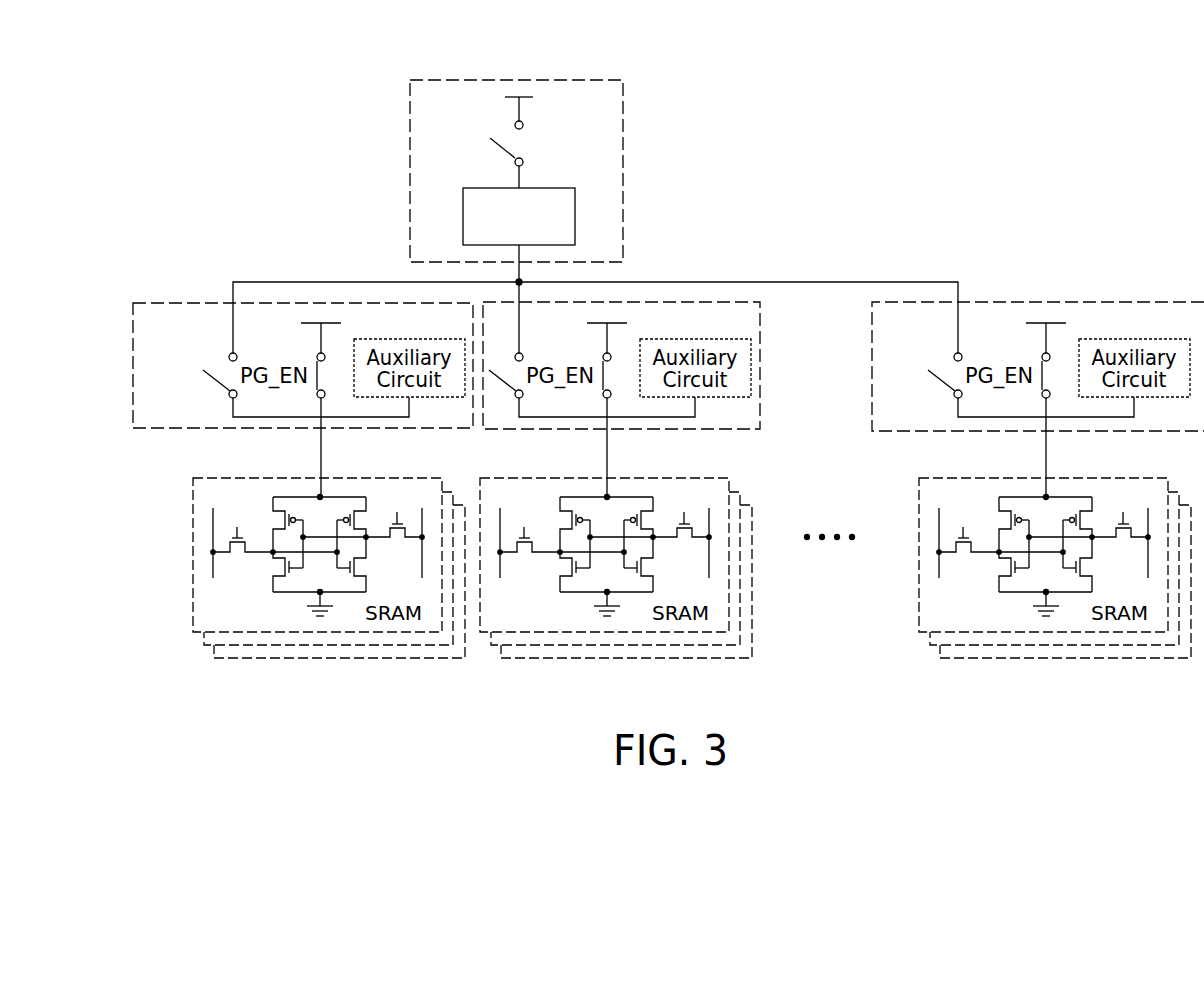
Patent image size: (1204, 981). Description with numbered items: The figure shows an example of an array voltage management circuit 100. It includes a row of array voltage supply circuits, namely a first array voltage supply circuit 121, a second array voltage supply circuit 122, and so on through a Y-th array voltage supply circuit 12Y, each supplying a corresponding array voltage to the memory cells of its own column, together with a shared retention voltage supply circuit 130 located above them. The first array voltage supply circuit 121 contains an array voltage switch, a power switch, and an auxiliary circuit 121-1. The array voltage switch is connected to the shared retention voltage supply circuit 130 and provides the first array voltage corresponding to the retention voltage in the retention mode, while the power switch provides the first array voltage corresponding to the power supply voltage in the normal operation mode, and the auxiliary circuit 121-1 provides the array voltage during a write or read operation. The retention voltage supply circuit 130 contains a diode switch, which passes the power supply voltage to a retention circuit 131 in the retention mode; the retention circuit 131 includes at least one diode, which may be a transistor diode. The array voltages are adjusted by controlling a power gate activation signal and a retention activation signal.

The array voltage management circuit 100 is at (1040, 99).
The retention voltage supply circuit 130 is at (623, 121).
The retention circuit 131 is at (576, 203).
The first array voltage supply circuit 121 is at (156, 300).
The auxiliary circuit 121-1 is at (400, 339).
The second array voltage supply circuit 122 is at (718, 300).
The Y-th array voltage supply circuit 12Y is at (1112, 300).